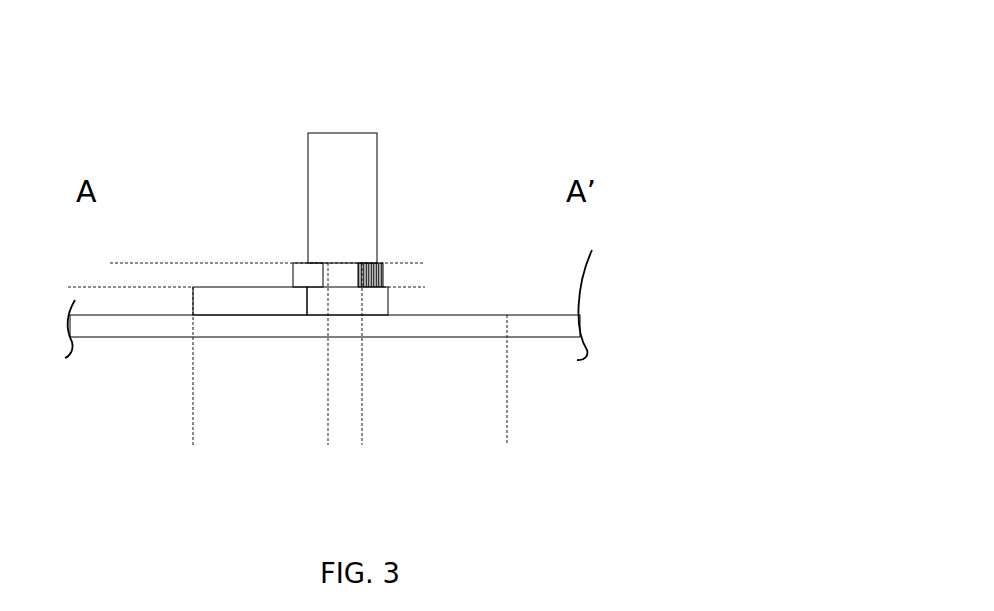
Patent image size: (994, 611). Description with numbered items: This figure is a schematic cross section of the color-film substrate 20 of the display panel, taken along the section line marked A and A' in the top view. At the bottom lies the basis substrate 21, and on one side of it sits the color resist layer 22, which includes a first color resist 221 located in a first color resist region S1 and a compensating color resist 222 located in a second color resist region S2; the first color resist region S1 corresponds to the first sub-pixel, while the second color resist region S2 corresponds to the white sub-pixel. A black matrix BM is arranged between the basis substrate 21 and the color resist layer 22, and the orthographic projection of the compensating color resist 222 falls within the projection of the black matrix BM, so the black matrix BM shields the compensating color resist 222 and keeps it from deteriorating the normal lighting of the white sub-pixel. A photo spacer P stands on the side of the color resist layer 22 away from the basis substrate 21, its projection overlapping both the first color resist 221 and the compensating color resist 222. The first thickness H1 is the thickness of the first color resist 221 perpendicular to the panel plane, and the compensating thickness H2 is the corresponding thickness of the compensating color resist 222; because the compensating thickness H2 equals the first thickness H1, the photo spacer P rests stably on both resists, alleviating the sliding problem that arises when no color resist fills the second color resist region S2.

The color-film substrate 20 is at (643, 112).
The basis substrate 21 is at (536, 337).
The color resist layer 22 is at (306, 336).
The first color resist 221 is at (289, 293).
The compensating color resist 222 is at (378, 283).
The black matrix BM is at (307, 283).
The photo spacer P is at (352, 217).
The first thickness H1 is at (163, 263).
The compensating thickness H2 is at (405, 263).
The first color resist region S1 is at (321, 428).
The second color resist region S2 is at (500, 428).